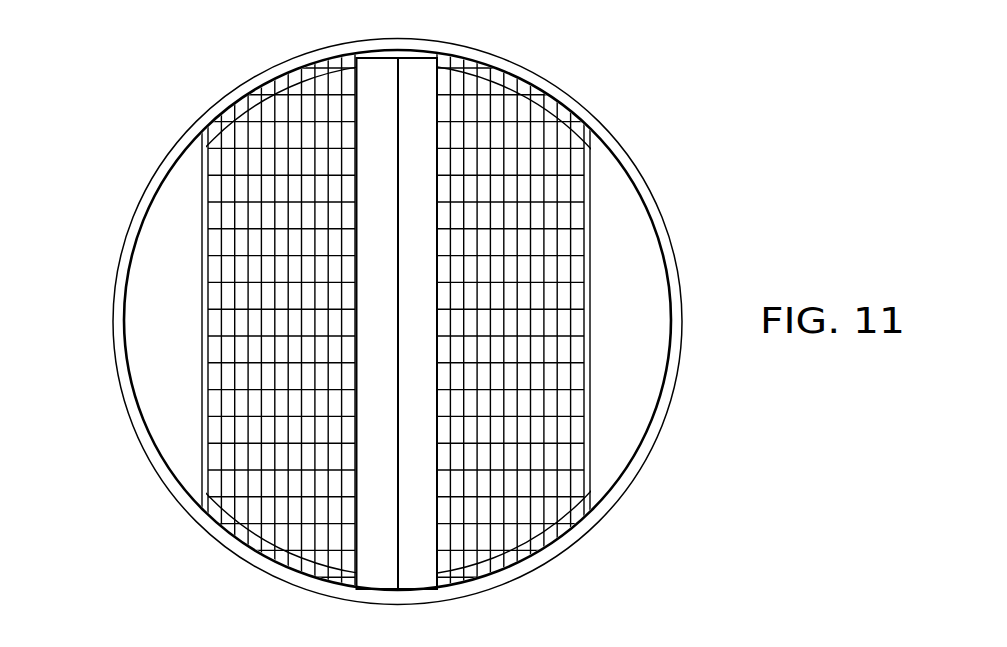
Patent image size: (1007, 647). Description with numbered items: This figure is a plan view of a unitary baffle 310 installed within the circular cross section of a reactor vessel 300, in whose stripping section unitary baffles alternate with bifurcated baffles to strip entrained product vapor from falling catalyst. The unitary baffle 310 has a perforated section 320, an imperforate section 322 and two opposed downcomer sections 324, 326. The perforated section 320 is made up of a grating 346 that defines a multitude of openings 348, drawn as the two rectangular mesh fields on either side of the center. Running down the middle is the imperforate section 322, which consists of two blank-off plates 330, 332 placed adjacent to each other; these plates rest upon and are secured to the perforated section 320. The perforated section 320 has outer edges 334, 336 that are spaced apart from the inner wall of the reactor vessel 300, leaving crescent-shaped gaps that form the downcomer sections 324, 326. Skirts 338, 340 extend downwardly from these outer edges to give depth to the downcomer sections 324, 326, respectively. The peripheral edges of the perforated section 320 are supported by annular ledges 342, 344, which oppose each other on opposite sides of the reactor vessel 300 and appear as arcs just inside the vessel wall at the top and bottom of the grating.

The reactor vessel 300 is at (627, 165).
The unitary baffle 310 is at (788, 440).
The perforated section 320 is at (552, 403).
The imperforate section 322 is at (417, 323).
The downcomer section 324 is at (638, 249).
The downcomer section 326 is at (165, 253).
The blank-off plate 330 is at (412, 573).
The blank-off plate 332 is at (387, 573).
The outer edge 334 is at (588, 360).
The outer edge 336 is at (206, 355).
The skirt 338 is at (591, 230).
The skirt 340 is at (200, 233).
The annular ledge 342 is at (522, 555).
The annular ledge 344 is at (282, 88).
The grating 346 is at (553, 470).
The openings 348 is at (537, 134).